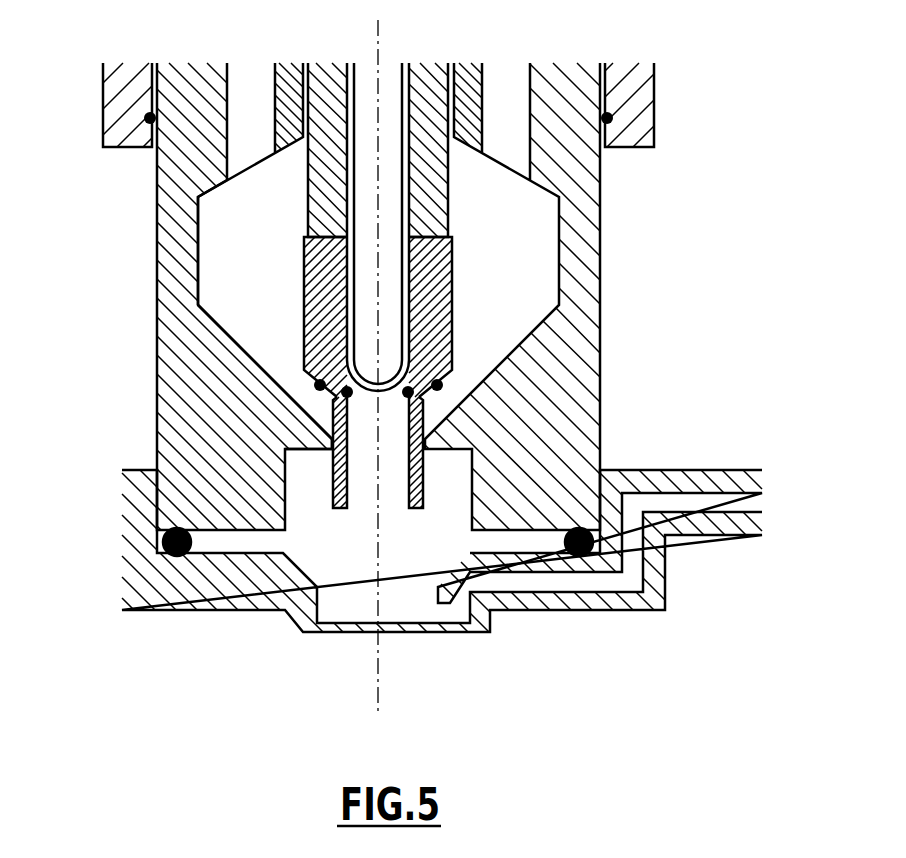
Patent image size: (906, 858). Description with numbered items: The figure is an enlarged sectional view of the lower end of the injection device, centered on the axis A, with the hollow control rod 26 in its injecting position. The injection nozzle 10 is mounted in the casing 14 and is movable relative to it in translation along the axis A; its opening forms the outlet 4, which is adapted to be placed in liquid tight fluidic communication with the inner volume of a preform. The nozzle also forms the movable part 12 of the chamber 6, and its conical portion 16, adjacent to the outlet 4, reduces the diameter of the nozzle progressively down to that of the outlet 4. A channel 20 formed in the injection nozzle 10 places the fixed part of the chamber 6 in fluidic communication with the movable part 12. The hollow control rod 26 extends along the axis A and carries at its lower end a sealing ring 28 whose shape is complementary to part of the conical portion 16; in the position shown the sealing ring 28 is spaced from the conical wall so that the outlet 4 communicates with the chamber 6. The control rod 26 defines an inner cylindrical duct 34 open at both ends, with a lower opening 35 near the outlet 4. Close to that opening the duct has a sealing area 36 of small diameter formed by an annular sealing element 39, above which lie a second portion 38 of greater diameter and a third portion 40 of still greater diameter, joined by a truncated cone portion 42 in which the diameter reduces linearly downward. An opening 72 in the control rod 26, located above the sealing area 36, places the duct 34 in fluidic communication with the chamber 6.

The outlet 4 is at (332, 450).
The chamber 6 is at (240, 232).
The injection nozzle 10 is at (573, 265).
The movable part of the chamber 12 is at (227, 270).
The casing 14 is at (133, 97).
The conical portion 16 is at (247, 347).
The channel 20 is at (507, 112).
The hollow control rod 26 is at (330, 140).
The sealing ring 28 is at (443, 387).
The inner cylindrical duct 34 is at (397, 457).
The lower opening 35 is at (362, 495).
The sealing area 36 is at (347, 392).
The second portion 38 is at (403, 172).
The sealing element 39 is at (408, 392).
The third portion 40 is at (388, 215).
The truncated cone portion 42 is at (390, 115).
The opening 72 is at (400, 308).
The axis A is at (378, 688).